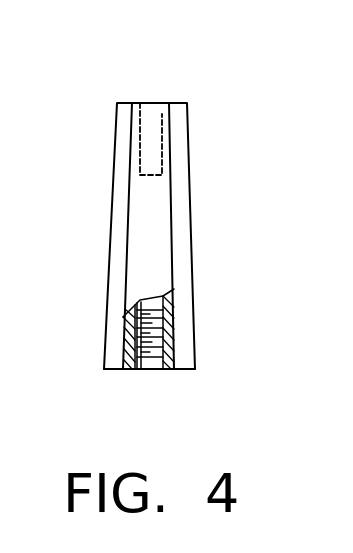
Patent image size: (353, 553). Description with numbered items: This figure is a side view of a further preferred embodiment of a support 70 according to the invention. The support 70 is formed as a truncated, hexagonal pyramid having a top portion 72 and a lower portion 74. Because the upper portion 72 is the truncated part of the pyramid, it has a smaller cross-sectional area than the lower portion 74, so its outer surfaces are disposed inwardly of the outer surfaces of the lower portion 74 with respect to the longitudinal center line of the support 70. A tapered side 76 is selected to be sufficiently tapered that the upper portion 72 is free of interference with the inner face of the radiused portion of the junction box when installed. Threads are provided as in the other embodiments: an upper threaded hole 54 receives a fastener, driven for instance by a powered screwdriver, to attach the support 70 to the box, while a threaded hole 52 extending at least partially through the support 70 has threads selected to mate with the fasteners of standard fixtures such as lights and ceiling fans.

The support 70 is at (166, 230).
The top portion 72 is at (187, 111).
The lower portion 74 is at (196, 367).
The tapered side 76 is at (112, 203).
The upper threaded hole 54 is at (161, 120).
The threaded hole 52 is at (148, 372).